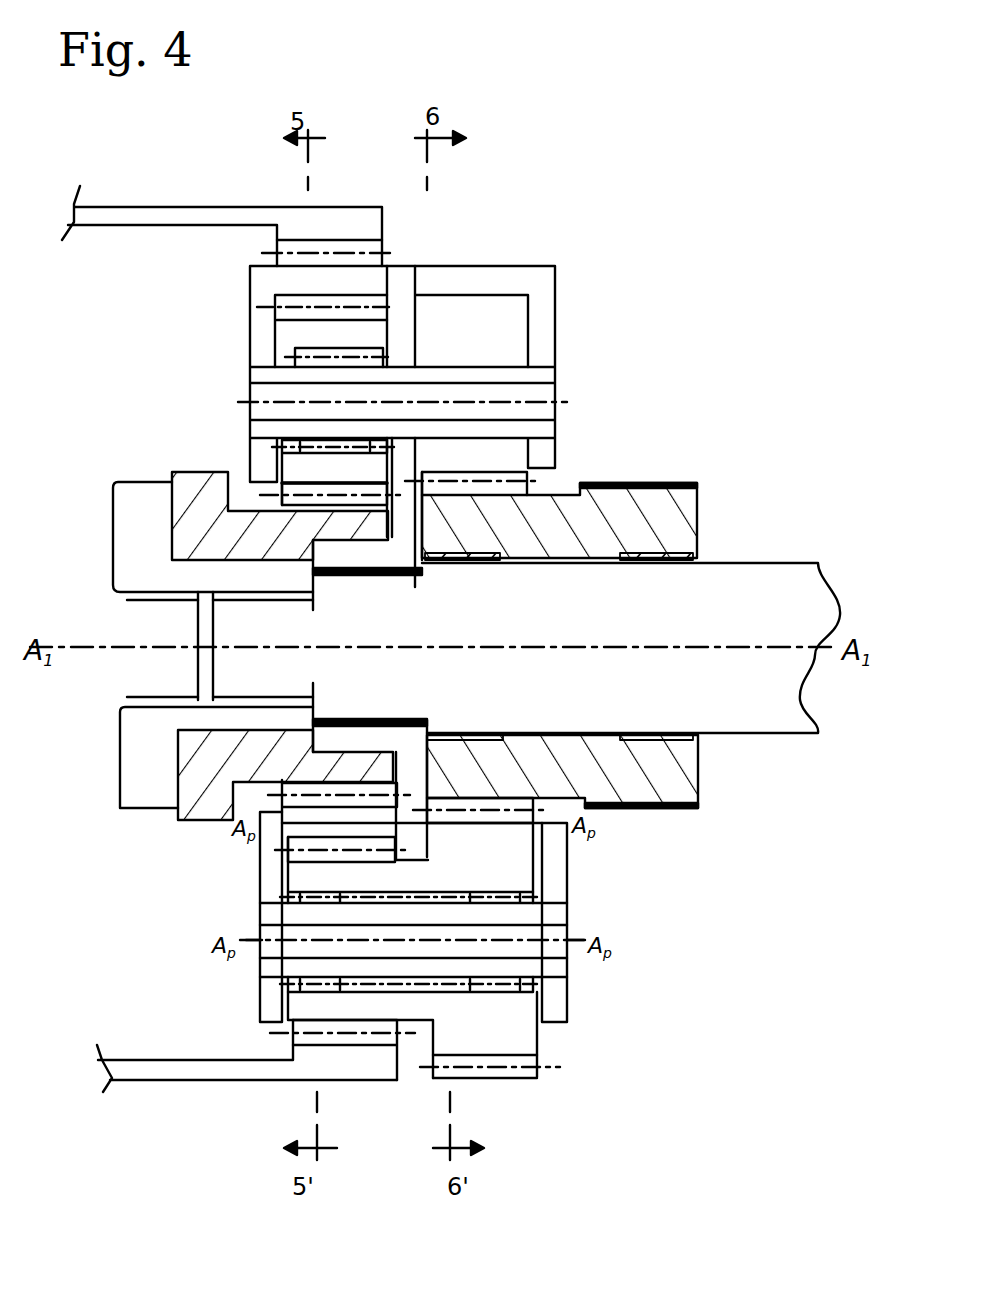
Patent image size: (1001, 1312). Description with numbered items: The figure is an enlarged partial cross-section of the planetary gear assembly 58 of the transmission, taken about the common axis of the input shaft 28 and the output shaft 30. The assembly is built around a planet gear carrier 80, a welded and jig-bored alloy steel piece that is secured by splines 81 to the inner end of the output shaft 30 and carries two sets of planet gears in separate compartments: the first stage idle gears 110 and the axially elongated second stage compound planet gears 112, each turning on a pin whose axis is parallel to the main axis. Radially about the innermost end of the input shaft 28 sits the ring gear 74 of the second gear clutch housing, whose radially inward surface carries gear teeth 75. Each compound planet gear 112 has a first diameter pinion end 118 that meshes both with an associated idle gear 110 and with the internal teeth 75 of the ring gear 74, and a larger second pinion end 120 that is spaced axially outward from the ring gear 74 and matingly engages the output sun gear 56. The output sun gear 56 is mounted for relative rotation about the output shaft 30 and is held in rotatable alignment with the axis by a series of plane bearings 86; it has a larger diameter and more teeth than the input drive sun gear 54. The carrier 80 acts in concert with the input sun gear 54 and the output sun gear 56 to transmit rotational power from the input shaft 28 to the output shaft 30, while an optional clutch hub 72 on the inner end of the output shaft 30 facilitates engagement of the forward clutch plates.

The input shaft 28 is at (181, 646).
The output shaft 30 is at (676, 640).
The input drive sun gear 54 is at (248, 753).
The output sun gear 56 is at (576, 546).
The planetary gear assembly 58 is at (238, 343).
The clutch hub 72 is at (140, 754).
The ring gear 74 is at (142, 210).
The gear teeth 75 is at (277, 238).
The planet gear carrier 80 is at (400, 291).
The splines 81 is at (415, 719).
The plane bearings 86 is at (647, 552).
The first stage idle gears 110 is at (302, 487).
The second stage compound planet gears 112 is at (495, 878).
The first diameter pinion end 118 is at (327, 1011).
The second pinion end 120 is at (478, 1028).